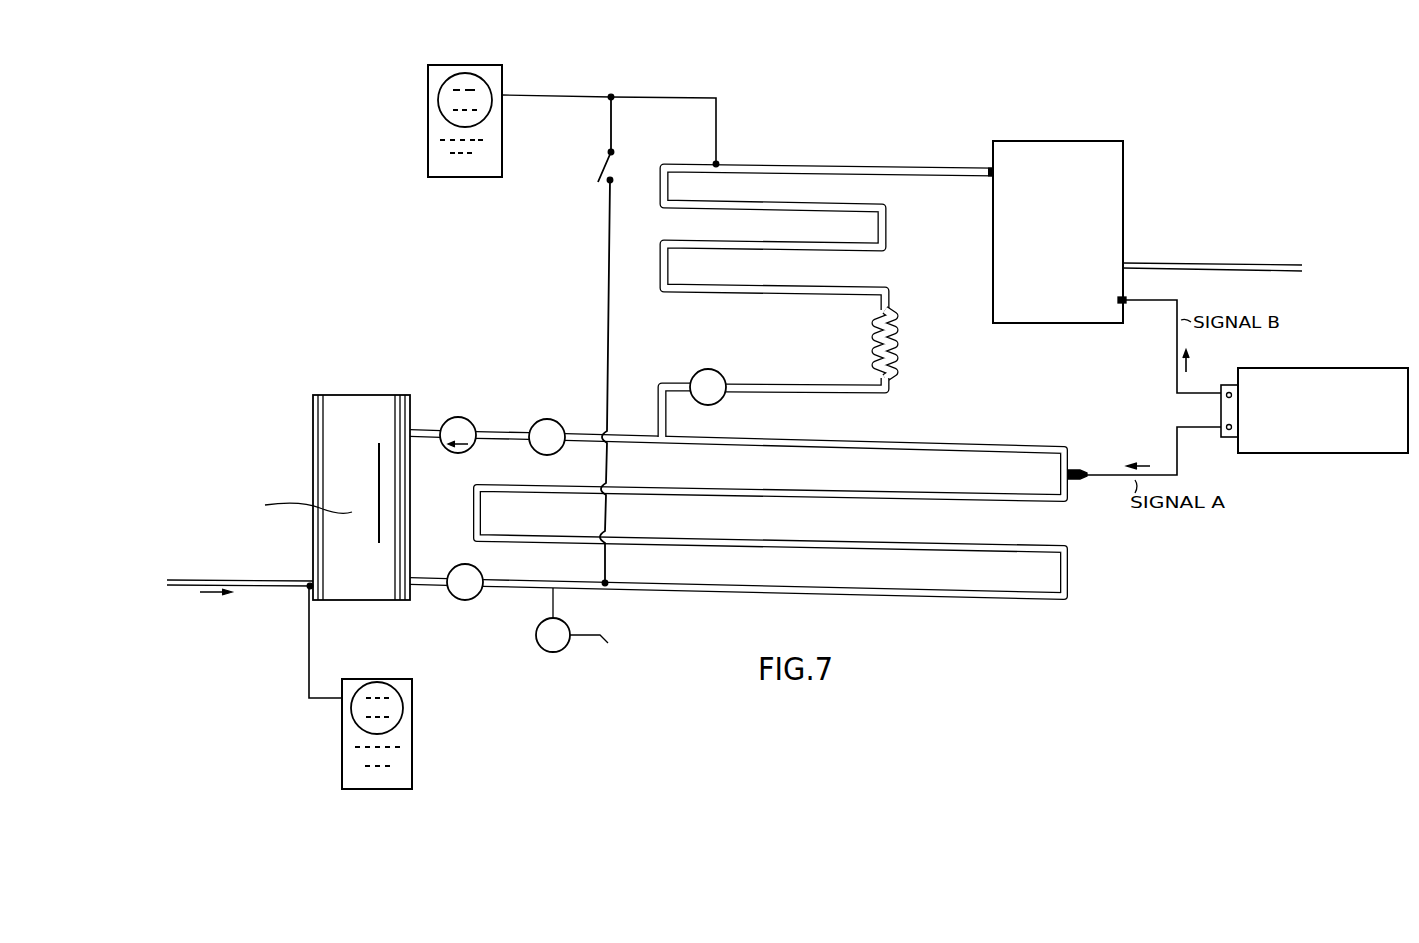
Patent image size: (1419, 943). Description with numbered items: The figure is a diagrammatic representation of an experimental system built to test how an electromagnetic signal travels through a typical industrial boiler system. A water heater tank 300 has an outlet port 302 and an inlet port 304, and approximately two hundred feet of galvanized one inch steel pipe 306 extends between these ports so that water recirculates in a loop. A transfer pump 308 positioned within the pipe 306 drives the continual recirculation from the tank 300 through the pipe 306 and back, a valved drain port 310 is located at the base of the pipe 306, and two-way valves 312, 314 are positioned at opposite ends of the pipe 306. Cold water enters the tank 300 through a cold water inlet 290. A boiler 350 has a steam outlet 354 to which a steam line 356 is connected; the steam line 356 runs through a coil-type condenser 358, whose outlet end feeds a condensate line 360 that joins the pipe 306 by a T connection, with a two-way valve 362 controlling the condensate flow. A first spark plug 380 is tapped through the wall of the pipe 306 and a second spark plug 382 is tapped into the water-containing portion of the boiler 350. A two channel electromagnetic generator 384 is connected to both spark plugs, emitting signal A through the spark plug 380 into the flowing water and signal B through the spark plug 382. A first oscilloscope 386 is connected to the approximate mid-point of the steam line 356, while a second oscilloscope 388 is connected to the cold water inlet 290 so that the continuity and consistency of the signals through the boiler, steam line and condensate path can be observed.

The cold water inlet 290 is at (306, 590).
The water heater tank 300 is at (318, 413).
The outlet port 302 is at (412, 592).
The inlet port 304 is at (418, 440).
The steel pipe 306 is at (982, 446).
The transfer pump 308 is at (475, 408).
The valved drain port 310 is at (553, 652).
The two-way valve 312 is at (482, 570).
The two-way valve 314 is at (555, 420).
The boiler 350 is at (1123, 167).
The steam outlet 354 is at (991, 170).
The steam line 356 is at (835, 164).
The coil-type condenser 358 is at (897, 348).
The condensate line 360 is at (780, 385).
The two-way valve 362 is at (724, 398).
The first spark plug 380 is at (1082, 468).
The second spark plug 382 is at (1125, 305).
The two channel electromagnetic generator 384 is at (1330, 454).
The first oscilloscope 386 is at (471, 65).
The second oscilloscope 388 is at (611, 325).